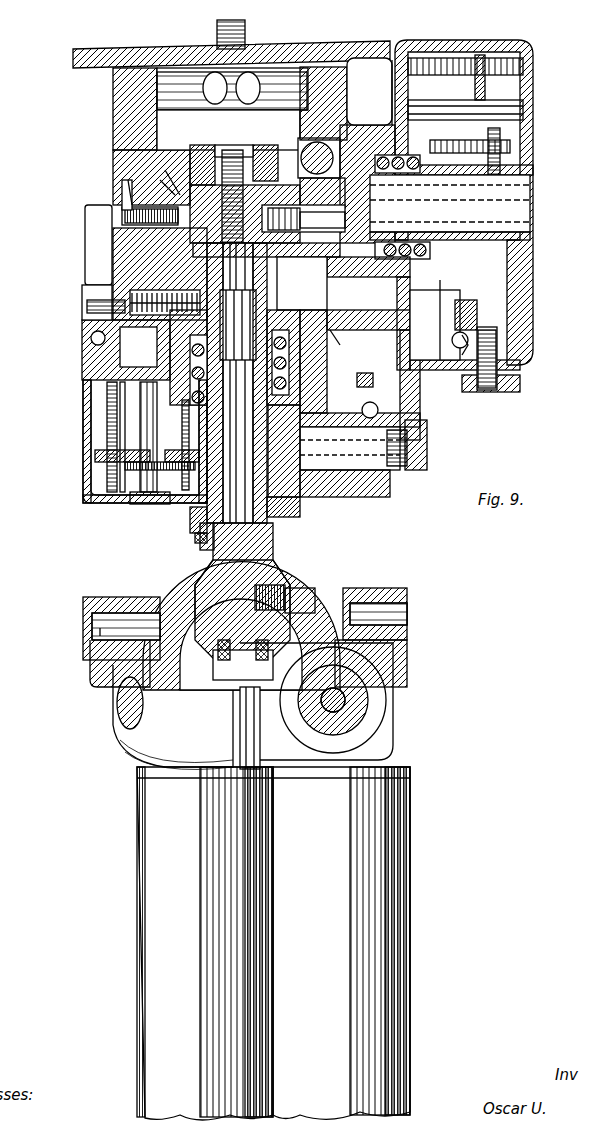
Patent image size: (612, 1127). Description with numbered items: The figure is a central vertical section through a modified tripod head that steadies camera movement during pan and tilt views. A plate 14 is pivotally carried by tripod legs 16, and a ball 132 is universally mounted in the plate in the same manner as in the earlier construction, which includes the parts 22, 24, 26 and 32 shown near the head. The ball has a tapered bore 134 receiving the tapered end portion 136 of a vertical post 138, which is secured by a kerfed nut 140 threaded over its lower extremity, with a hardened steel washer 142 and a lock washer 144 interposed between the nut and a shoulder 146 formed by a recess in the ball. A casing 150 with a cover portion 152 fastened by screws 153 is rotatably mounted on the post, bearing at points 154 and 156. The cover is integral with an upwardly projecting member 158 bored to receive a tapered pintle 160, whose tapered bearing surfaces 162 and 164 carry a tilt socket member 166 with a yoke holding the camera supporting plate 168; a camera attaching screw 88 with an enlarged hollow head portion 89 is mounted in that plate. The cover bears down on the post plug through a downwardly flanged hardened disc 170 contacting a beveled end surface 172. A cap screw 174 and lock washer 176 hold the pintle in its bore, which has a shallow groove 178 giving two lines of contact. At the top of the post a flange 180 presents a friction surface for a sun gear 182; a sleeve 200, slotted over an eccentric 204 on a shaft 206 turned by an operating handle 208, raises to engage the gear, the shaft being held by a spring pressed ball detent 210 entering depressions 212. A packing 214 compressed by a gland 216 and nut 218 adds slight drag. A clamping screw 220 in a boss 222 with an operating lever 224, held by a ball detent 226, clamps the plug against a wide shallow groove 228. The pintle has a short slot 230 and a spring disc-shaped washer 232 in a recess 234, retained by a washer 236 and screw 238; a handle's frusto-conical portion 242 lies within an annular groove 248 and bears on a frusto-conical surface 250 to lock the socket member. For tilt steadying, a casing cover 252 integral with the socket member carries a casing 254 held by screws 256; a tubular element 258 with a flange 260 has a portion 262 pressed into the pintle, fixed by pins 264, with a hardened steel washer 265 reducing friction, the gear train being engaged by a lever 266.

The plate 14 is at (393, 658).
The tripod legs 16 is at (136, 826).
The bearing 22 is at (327, 590).
The cap 24 is at (385, 598).
The ring 26 is at (350, 600).
The post 32 is at (100, 632).
The camera attaching screw 88 is at (246, 24).
The enlarged hollow head portion 89 is at (232, 110).
The ball 132 is at (292, 578).
The tapered bore 134 is at (290, 524).
The tapered end portion 136 is at (210, 556).
The vertical post 138 is at (205, 507).
The kerfed nut 140 is at (220, 665).
The hardened steel washer 142 is at (215, 648).
The lock washer 144 is at (222, 655).
The shoulder 146 is at (255, 658).
The casing 150 is at (360, 488).
The cover portion 152 is at (338, 365).
The screws 153 is at (105, 408).
The bearing point 154 is at (303, 503).
The bearing point 156 is at (225, 275).
The upwardly projecting member 158 is at (205, 162).
The tapered pintle 160 is at (175, 193).
The tapered bearing surface 162 is at (110, 296).
The tapered bearing surface 164 is at (346, 128).
The tilt socket member 166 is at (128, 118).
The camera supporting plate 168 is at (352, 43).
The downwardly flanged hardened disc 170 is at (292, 278).
The beveled end surface 172 is at (283, 302).
The cap screw 174 is at (252, 146).
The lock washer 176 is at (268, 156).
The shallow groove 178 is at (200, 175).
The flange 180 is at (290, 352).
The sun gear 182 is at (312, 384).
The sleeve 200 is at (322, 409).
The eccentric 204 is at (353, 500).
The shaft 206 is at (405, 420).
The operating handle 208 is at (413, 470).
The spring pressed ball detent 210 is at (403, 405).
The depressions 212 is at (403, 478).
The packing 214 is at (150, 505).
The gland 216 is at (200, 528).
The nut 218 is at (207, 541).
The screw 220 is at (88, 306).
The boss 222 is at (160, 322).
The operating lever 224 is at (113, 258).
The spring pressed ball detent 226 is at (91, 340).
The wide shallow groove 228 is at (215, 330).
The short slot 230 is at (124, 210).
The spring disc-shaped washer 232 is at (150, 190).
The recess 234 is at (125, 195).
The washer 236 is at (122, 250).
The screw 238 is at (85, 215).
The frusto-conical portion 242 is at (372, 84).
The annular groove 248 is at (335, 240).
The frusto-conical surface 250 is at (290, 240).
The casing cover 252 is at (400, 54).
The casing 254 is at (530, 364).
The screws 256 is at (447, 72).
The tubular element 258 is at (480, 250).
The flange 260 is at (395, 252).
The portion 262 is at (375, 245).
The pins 264 is at (400, 245).
The hardened steel washer 265 is at (450, 318).
The lever 266 is at (520, 390).